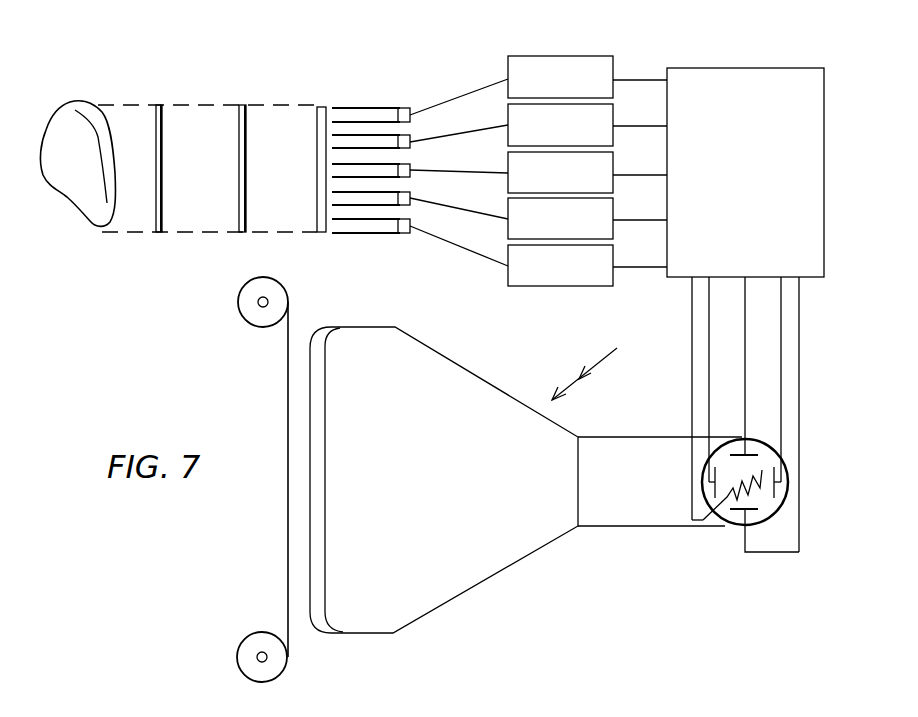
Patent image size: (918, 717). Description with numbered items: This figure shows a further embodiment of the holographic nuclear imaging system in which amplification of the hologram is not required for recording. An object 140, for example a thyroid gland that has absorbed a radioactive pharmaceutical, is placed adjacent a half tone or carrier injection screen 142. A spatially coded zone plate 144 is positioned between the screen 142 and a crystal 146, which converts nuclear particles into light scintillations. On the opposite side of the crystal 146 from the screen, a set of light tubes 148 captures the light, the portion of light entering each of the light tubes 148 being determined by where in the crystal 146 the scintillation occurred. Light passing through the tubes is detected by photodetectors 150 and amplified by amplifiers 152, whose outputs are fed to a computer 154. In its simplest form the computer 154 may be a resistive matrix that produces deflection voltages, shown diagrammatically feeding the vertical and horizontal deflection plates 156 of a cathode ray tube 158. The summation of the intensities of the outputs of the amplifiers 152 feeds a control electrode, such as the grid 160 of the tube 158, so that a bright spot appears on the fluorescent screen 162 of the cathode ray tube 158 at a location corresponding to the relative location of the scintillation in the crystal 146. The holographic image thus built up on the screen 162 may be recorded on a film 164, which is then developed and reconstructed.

The object 140 is at (78, 102).
The half tone or carrier injection screen 142 is at (163, 103).
The spatially coded zone plate 144 is at (245, 108).
The crystal 146 is at (320, 112).
The light tubes 148 is at (375, 142).
The photodetectors 150 is at (405, 143).
The amplifiers 152 is at (560, 113).
The computer 154 is at (725, 77).
The vertical and horizontal deflection plates 156 is at (718, 476).
The cathode ray tube 158 is at (602, 369).
The grid 160 is at (780, 453).
The fluorescent screen 162 is at (327, 332).
The film 164 is at (288, 632).